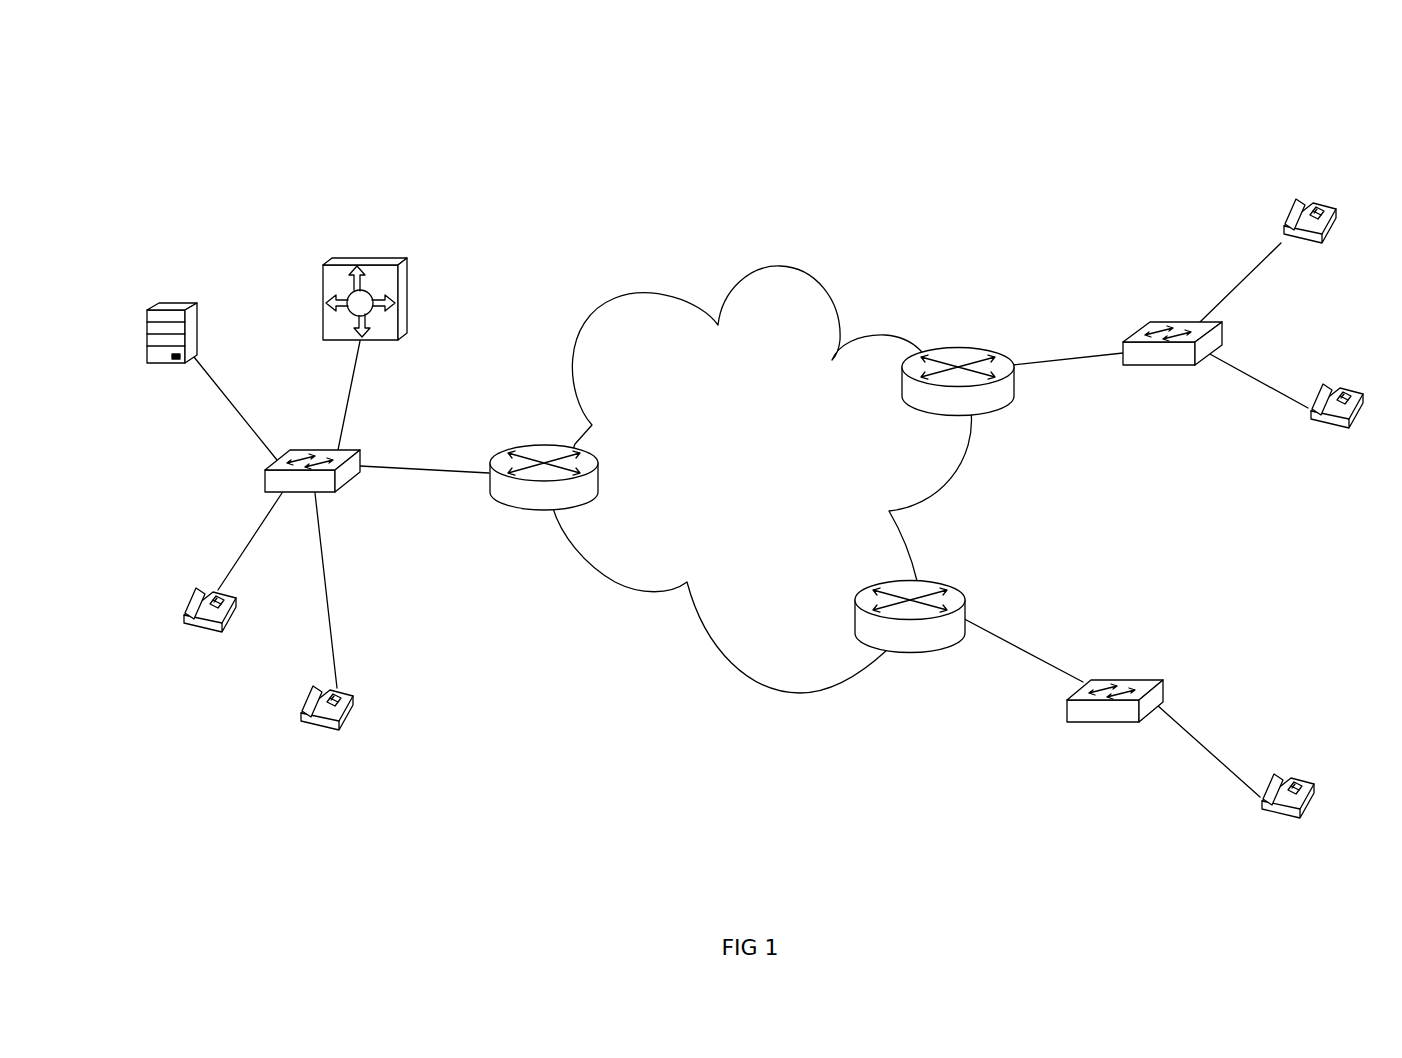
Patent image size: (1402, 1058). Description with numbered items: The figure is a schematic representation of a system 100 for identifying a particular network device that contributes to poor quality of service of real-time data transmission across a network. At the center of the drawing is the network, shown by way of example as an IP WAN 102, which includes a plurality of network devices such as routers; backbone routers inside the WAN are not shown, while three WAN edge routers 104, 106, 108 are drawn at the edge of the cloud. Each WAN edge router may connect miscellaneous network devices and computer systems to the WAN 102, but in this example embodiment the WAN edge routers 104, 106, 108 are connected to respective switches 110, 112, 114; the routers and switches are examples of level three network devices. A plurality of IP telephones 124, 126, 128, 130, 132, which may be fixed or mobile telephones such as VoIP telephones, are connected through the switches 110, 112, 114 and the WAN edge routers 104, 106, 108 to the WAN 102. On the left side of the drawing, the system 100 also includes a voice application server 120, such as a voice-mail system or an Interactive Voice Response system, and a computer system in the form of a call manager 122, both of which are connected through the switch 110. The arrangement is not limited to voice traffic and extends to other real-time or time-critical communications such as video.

The system 100 is at (405, 114).
The IP WAN 102 is at (647, 291).
The WAN edge router 104 is at (508, 507).
The WAN edge router 106 is at (984, 415).
The WAN edge router 108 is at (911, 653).
The switch 110 is at (265, 482).
The switch 112 is at (1223, 338).
The switch 114 is at (1165, 693).
The voice application server 120 is at (178, 302).
The call manager 122 is at (372, 256).
The IP telephone 124 is at (187, 612).
The IP telephone 126 is at (298, 712).
The IP telephone 128 is at (1320, 198).
The IP telephone 130 is at (1349, 385).
The IP telephone 132 is at (1312, 798).